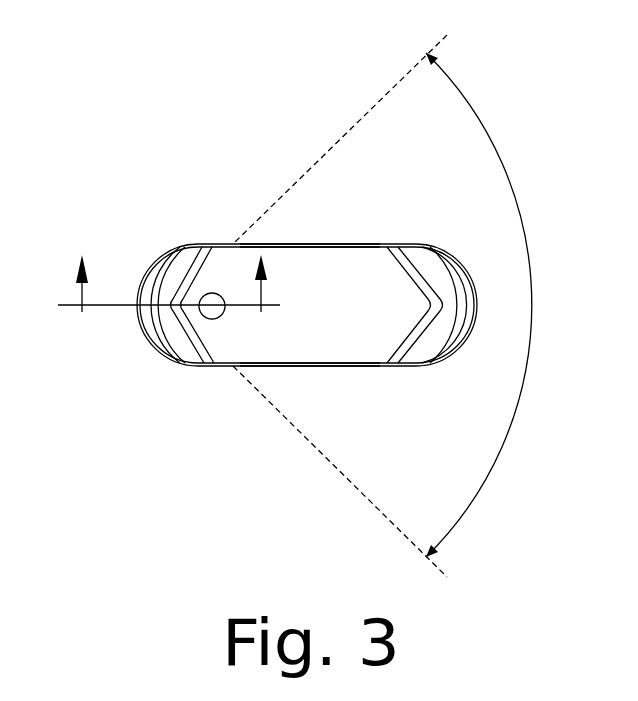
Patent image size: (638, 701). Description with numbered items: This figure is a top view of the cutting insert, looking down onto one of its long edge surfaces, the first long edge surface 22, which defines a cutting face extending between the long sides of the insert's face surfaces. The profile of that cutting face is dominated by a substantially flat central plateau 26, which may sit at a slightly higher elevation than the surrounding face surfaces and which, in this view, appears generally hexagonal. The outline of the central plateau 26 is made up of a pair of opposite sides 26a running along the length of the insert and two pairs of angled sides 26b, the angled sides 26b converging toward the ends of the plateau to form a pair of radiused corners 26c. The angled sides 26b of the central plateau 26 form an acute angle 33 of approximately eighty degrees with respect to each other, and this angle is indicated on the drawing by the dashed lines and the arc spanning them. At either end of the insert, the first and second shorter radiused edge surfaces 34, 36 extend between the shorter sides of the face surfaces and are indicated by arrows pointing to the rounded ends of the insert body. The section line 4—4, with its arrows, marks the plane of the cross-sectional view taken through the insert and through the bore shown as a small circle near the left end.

The section line 4- 4 is at (173, 289).
The first long edge surface 22 is at (323, 255).
The central plateau 26 is at (349, 263).
The opposite sides 26a is at (293, 248).
The angled sides 26b is at (196, 262).
The radiused corners 26c is at (172, 298).
The acute angle 33 is at (531, 377).
The first shorter radiused edge surface 34 is at (137, 332).
The second shorter radiused edge surface 36 is at (486, 303).